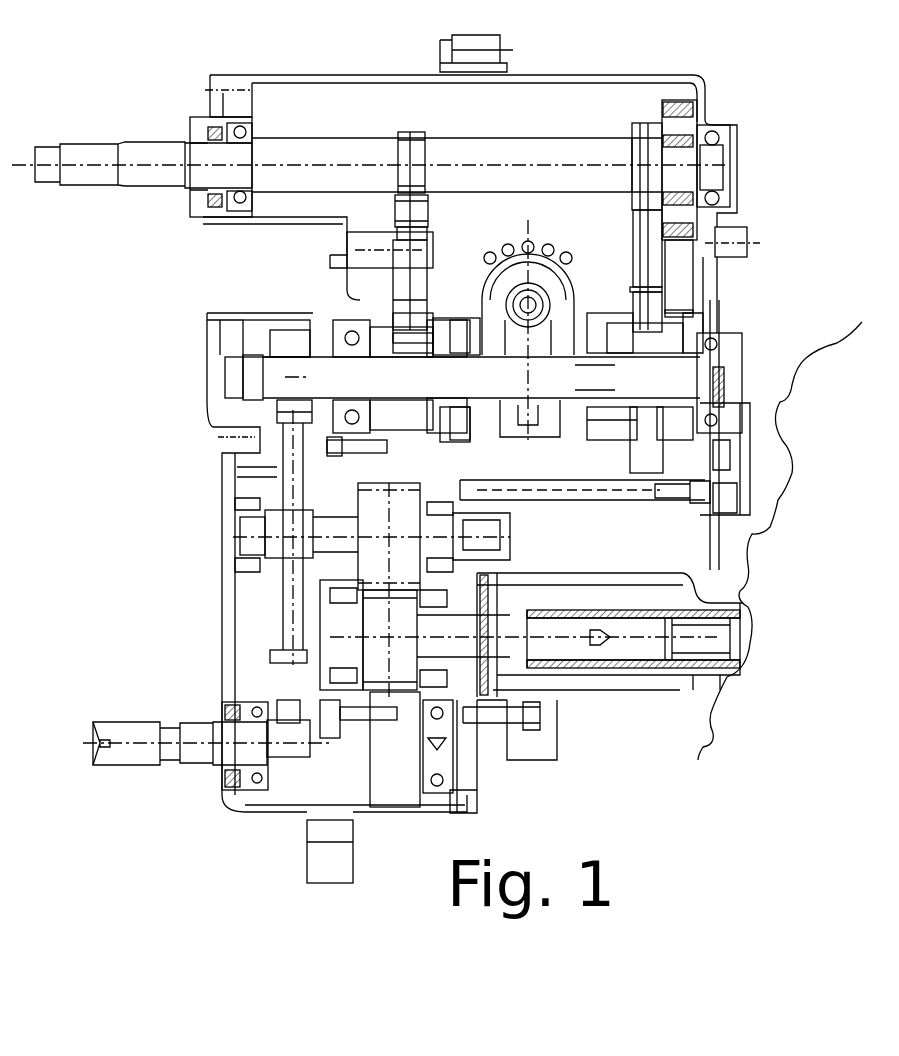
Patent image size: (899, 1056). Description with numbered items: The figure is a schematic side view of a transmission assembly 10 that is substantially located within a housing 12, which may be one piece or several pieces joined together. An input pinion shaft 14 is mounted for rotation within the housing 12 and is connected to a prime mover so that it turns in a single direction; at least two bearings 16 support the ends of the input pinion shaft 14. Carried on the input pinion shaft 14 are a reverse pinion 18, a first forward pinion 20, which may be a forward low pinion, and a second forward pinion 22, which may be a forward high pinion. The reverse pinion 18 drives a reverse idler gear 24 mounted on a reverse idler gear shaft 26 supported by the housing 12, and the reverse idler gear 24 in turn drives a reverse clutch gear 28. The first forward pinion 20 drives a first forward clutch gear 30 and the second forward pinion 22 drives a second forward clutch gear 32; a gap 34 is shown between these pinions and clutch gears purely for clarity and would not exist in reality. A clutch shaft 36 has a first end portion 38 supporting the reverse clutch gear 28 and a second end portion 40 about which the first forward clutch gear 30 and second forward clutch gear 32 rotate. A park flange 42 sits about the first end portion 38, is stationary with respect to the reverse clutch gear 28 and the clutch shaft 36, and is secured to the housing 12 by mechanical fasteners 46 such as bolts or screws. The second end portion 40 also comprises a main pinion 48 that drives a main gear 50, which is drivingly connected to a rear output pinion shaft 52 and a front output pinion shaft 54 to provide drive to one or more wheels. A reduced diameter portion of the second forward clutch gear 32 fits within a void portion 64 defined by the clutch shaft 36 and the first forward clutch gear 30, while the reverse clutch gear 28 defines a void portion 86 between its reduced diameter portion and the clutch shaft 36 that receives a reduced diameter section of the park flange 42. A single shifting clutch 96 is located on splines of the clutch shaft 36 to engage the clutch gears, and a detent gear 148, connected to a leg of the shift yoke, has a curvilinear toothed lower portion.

The transmission assembly 10 is at (715, 46).
The housing 12 is at (322, 313).
The input pinion shaft 14 is at (350, 153).
The bearings 16 is at (723, 132).
The reverse pinion 18 is at (417, 145).
The first forward pinion 20 is at (663, 120).
The second forward pinion 22 is at (680, 130).
The reverse idler gear 24 is at (407, 212).
The reverse idler gear shaft 26 is at (357, 237).
The reverse clutch gear 28 is at (403, 315).
The first forward clutch gear 30 is at (647, 307).
The second forward clutch gear 32 is at (687, 340).
The gap 34 is at (702, 260).
The clutch shaft 36 is at (683, 377).
The first end portion 38 is at (340, 369).
The second end portion 40 is at (597, 388).
The park flange 42 is at (392, 413).
The mechanical fastener 46 is at (352, 452).
The main pinion 48 is at (277, 405).
The main gear 50 is at (287, 473).
The rear output pinion shaft 52 is at (373, 622).
The front output pinion shaft 54 is at (135, 728).
The void portion 64 is at (603, 428).
The void portion 86 is at (450, 440).
The shifting clutch 96 is at (480, 397).
The detent gear 148 is at (493, 287).